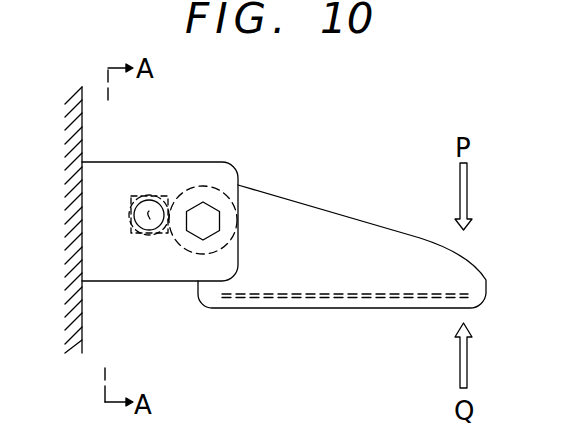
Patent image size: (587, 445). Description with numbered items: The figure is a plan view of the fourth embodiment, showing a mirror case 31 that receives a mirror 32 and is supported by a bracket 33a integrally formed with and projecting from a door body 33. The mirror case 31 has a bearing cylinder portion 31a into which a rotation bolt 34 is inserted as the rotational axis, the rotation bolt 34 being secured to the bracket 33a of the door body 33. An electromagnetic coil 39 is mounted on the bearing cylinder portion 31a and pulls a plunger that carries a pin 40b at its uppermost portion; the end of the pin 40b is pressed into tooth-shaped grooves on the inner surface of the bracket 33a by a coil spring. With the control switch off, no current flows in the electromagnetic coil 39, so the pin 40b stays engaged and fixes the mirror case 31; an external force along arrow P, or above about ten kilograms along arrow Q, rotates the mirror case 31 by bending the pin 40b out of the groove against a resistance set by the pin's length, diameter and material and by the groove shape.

The mirror case 31 is at (342, 210).
The bearing cylinder portion 31a is at (202, 185).
The mirror 32 is at (353, 297).
The door body 33 is at (143, 146).
The bracket 33a is at (155, 162).
The rotation bolt 34 is at (207, 217).
The electromagnetic coil 39 is at (133, 223).
The pin 40b is at (154, 225).